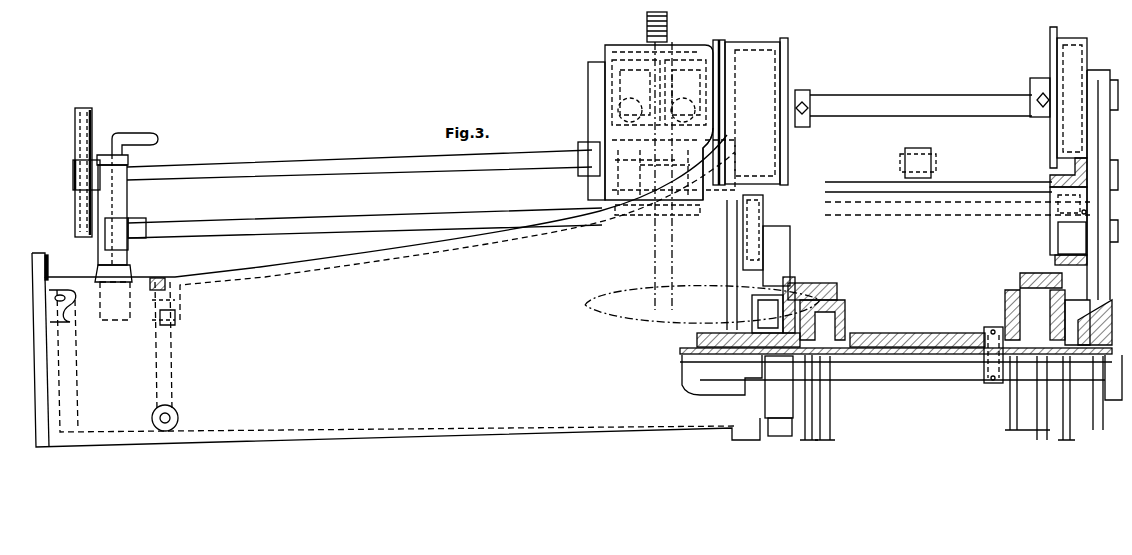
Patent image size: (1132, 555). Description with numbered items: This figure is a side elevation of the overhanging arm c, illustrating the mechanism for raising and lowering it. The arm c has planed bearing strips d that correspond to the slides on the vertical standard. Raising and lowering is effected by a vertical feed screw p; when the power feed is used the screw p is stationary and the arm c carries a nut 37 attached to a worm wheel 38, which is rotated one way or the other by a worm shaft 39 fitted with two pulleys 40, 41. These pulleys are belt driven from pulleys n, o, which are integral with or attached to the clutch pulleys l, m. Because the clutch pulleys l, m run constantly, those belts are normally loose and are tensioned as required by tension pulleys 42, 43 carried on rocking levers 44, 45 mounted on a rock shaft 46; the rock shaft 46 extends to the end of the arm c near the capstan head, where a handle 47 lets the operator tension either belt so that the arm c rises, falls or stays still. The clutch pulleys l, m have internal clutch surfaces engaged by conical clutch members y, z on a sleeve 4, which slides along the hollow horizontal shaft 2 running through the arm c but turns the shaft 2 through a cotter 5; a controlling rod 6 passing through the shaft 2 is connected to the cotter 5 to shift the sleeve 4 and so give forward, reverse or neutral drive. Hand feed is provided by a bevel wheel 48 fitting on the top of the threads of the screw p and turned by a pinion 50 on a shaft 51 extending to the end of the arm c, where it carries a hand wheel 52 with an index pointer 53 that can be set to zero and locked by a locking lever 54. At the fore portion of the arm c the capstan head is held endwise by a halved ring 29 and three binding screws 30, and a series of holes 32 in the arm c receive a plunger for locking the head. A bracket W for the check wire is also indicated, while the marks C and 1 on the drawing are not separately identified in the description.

The overhanging arm c is at (406, 402).
The casing bracket C is at (49, 322).
The series of holes 32 is at (50, 272).
The halved ring 29 is at (156, 345).
The binding screws 30 is at (168, 330).
The handle 47 is at (142, 232).
The index pointer 53 is at (82, 110).
The hand wheel 52 is at (78, 179).
The locking lever 54 is at (140, 138).
The shaft 51 is at (326, 160).
The rock shaft 46 is at (294, 226).
The vertical feed screw p is at (668, 24).
The worm shaft 39 is at (604, 110).
The worm wheel 38 is at (636, 92).
The nut 37 is at (685, 92).
The pinion 50 is at (606, 190).
The bevel wheel 48 is at (693, 148).
The planed bearing strips d is at (787, 44).
The pulley 40 is at (762, 76).
The pulley 41 is at (1062, 54).
The bracket W is at (918, 154).
The rocking lever 45 is at (1084, 213).
The tension pulley 43 is at (1085, 233).
The rocking lever 44 is at (756, 238).
The tension pulley 42 is at (777, 248).
The clutch pulley l is at (808, 290).
The feed pulley n is at (780, 306).
The conical clutch member y is at (846, 298).
The horizontal shaft 2 is at (868, 338).
The sleeve 4 is at (928, 334).
The controlling rod 6 is at (928, 355).
The cotter 5 is at (992, 328).
The conical clutch member z is at (1006, 294).
The clutch pulley m is at (1042, 280).
The feed pulley o is at (1086, 305).
The disc 1 is at (822, 412).